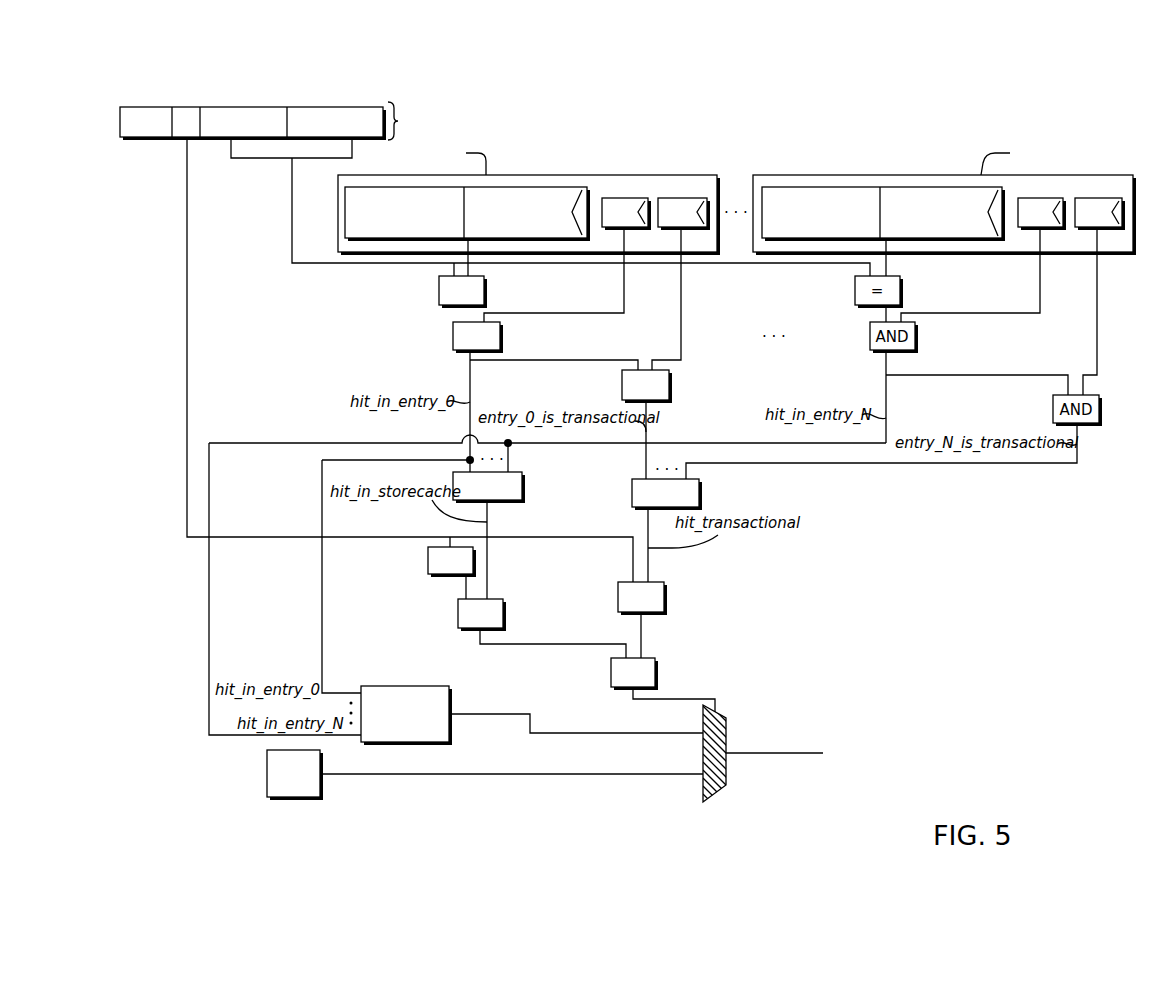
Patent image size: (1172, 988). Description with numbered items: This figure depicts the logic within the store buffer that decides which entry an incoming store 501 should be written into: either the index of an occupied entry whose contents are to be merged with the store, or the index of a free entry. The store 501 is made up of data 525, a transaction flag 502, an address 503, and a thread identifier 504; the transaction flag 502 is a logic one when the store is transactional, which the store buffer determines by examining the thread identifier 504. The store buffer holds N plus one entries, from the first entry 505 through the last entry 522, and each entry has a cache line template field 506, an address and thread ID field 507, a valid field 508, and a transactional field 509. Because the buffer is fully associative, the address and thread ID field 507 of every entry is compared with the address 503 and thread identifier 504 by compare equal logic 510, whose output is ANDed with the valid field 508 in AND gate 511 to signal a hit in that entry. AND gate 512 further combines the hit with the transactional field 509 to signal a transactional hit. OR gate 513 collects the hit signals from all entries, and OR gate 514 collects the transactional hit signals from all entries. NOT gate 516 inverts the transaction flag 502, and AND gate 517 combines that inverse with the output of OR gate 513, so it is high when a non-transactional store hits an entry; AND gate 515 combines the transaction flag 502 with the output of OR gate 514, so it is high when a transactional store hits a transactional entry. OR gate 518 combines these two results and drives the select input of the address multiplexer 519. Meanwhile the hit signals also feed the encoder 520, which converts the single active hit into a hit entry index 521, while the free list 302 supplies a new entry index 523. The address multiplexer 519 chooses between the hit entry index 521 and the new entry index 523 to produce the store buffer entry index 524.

The store 501 is at (286, 106).
The data 525 is at (137, 107).
The transaction flag 502 is at (187, 107).
The address 503 is at (243, 107).
The thread identifier 504 is at (333, 107).
The entry_0 505 is at (516, 175).
The cache line template field 506 is at (359, 238).
The address and thread ID field 507 is at (572, 190).
The valid field 508 is at (624, 198).
The transactional field 509 is at (681, 198).
The entry_N 522 is at (928, 175).
The compare equal logic 510 is at (488, 292).
The AND gate 511 is at (504, 337).
The AND gate 512 is at (673, 385).
The OR gate 513 is at (525, 487).
The OR gate 514 is at (702, 493).
The AND gate 515 is at (667, 597).
The NOT gate 516 is at (426, 560).
The AND gate 517 is at (456, 613).
The OR gate 518 is at (658, 672).
The address multiplexer 519 is at (727, 778).
The encoder 520 is at (405, 686).
The hit entry index 521 is at (490, 714).
The new entry index 523 is at (538, 774).
The store buffer entry index 524 is at (773, 753).
The free list 302 is at (265, 775).